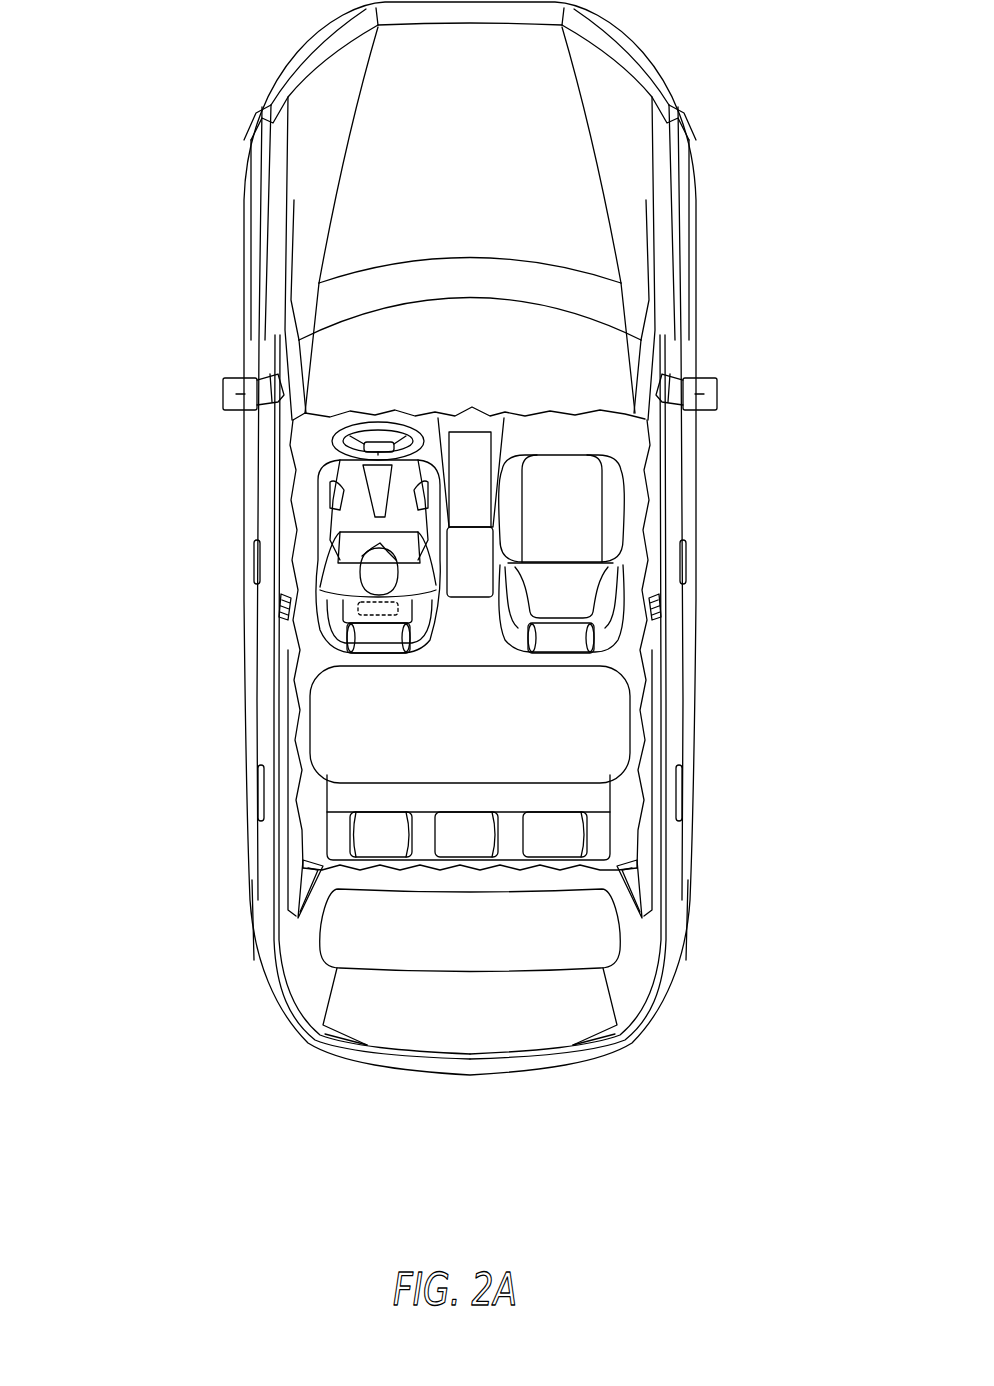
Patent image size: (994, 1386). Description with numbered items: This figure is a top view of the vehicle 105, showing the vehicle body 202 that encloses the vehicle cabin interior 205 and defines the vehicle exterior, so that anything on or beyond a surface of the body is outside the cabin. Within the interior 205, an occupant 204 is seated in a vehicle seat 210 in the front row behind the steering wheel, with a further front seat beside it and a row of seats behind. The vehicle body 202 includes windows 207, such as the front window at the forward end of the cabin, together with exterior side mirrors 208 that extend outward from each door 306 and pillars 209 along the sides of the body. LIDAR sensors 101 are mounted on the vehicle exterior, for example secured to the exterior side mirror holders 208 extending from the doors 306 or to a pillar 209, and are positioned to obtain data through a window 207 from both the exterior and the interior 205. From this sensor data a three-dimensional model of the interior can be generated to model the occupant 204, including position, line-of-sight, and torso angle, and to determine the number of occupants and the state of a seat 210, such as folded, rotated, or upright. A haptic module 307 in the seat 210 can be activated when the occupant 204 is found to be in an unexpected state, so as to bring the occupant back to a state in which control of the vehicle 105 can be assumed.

The LIDAR sensor 101 is at (236, 395).
The vehicle 105 is at (455, 1127).
The vehicle body 202 is at (429, 1076).
The occupant 204 is at (327, 553).
The vehicle cabin interior 205 is at (457, 736).
The window 207 is at (481, 357).
The exterior side mirror 208 is at (258, 350).
The pillar 209 is at (257, 330).
The vehicle seat 210 is at (332, 637).
The door 306 is at (248, 502).
The haptic module 307 is at (357, 612).